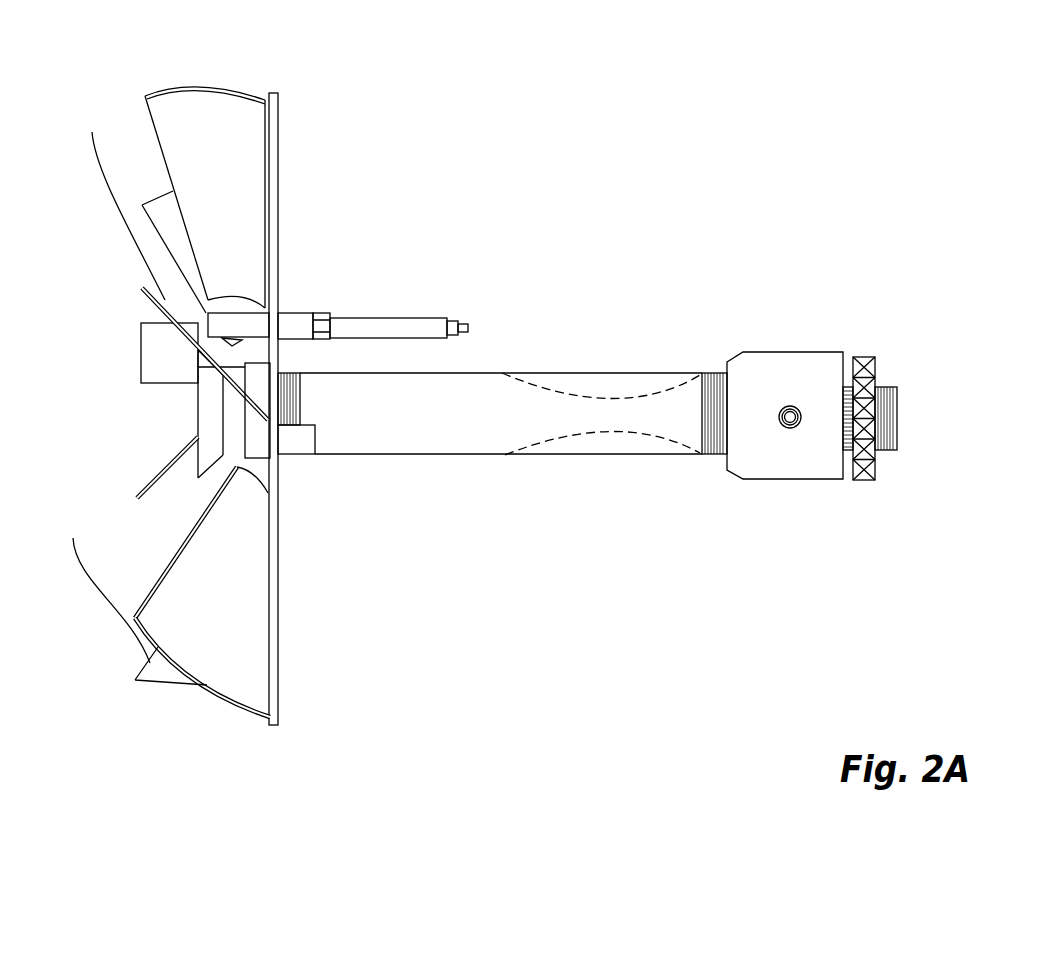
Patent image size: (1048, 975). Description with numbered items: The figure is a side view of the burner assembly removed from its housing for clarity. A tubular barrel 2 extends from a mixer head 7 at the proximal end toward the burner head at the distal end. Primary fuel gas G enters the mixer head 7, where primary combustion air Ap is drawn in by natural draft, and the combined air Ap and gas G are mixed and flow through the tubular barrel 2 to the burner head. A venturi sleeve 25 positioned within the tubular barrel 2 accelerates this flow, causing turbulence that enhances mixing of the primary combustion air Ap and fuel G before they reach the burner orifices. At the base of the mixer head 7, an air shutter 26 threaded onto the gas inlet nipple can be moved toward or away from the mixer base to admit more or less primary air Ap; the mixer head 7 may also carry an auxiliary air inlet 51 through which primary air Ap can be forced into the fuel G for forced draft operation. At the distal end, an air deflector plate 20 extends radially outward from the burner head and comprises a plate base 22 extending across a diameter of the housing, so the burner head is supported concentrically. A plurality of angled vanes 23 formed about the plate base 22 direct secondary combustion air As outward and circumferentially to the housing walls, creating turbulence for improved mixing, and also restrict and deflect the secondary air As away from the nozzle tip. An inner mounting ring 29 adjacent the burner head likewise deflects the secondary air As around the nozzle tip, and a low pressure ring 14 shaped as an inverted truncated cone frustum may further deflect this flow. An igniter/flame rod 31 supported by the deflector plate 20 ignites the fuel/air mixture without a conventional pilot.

The tubular barrel 2 is at (503, 455).
The mixer head 7 is at (783, 482).
The low pressure ring 14 is at (197, 413).
The air deflector plate 20 is at (332, 417).
The plate base 22 is at (279, 645).
The angled vanes 23 is at (210, 120).
The venturi sleeve 25 is at (627, 383).
The air shutter 26 is at (863, 481).
The inner mounting ring 29 is at (262, 462).
The igniter/flame rod 31 is at (141, 350).
The auxiliary air inlet 51 is at (787, 405).
The primary fuel gas G is at (910, 418).
The secondary combustion air As is at (867, 187).
The primary combustion air Ap is at (847, 363).